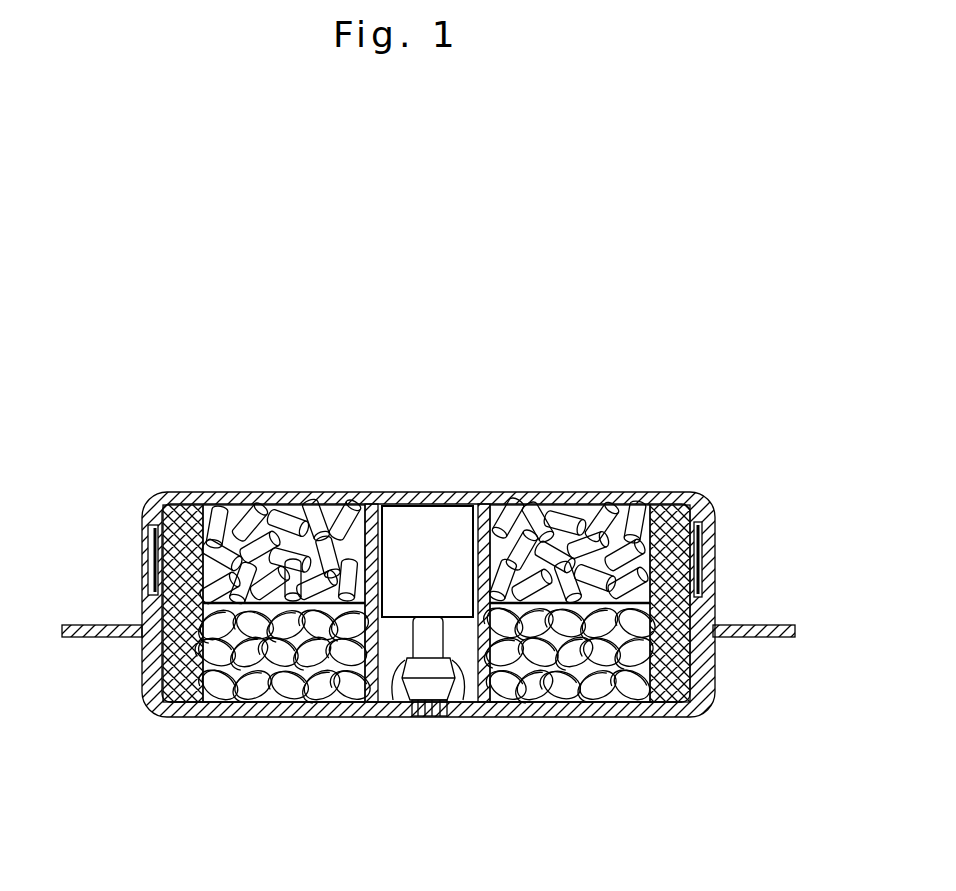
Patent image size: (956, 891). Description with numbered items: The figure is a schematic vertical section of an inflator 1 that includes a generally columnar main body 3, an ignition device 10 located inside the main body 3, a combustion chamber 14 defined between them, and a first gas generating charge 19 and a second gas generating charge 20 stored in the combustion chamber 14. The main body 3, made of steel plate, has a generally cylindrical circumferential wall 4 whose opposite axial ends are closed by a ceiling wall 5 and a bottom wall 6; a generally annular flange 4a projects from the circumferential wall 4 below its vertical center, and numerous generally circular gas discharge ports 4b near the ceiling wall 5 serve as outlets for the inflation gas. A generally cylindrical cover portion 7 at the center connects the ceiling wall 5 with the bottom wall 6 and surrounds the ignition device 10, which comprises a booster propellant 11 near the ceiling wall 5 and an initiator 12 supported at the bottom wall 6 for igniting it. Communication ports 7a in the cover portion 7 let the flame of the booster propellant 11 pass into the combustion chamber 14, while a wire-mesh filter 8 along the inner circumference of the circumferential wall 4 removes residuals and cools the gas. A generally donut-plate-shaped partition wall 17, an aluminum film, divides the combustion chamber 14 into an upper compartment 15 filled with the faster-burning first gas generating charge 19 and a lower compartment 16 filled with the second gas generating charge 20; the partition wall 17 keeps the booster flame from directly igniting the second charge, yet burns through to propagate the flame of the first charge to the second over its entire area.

The inflator 1 is at (427, 571).
The main body 3 is at (428, 606).
The circumferential wall 4 is at (427, 653).
The flange 4a is at (92, 634).
The gas discharge ports 4b is at (145, 560).
The ceiling wall 5 is at (428, 500).
The bottom wall 6 is at (323, 713).
The cover portion 7 is at (427, 613).
The communication ports 7a is at (372, 558).
The filter 8 is at (668, 690).
The ignition device 10 is at (456, 736).
The booster propellant 11 is at (460, 612).
The initiator 12 is at (428, 698).
The combustion chamber 14 is at (576, 535).
The upper compartment 15 is at (617, 514).
The lower compartment 16 is at (648, 607).
The partition wall 17 is at (281, 613).
The first gas generating charge 19 is at (243, 522).
The second gas generating charge 20 is at (253, 694).